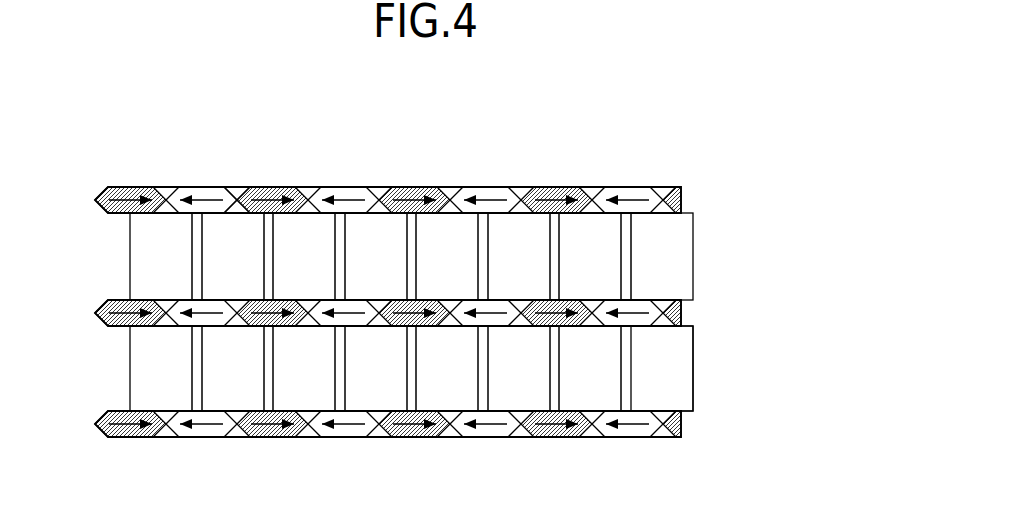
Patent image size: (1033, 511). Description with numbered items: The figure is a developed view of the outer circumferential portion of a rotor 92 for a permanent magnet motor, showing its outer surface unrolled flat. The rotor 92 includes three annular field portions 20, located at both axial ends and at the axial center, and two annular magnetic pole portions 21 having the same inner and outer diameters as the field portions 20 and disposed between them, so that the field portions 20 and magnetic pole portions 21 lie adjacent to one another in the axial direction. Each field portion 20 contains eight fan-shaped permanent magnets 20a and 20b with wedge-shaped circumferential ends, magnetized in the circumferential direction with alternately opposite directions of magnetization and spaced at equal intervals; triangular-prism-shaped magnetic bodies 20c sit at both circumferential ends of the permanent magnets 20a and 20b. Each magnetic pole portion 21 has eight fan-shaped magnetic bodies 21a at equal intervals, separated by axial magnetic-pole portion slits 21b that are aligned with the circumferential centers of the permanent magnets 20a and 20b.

The field portion 20 is at (409, 263).
The permanent magnet 20a is at (340, 188).
The permanent magnet 20b is at (132, 188).
The magnetic body 20c is at (233, 188).
The magnetic pole portion 21 is at (373, 355).
The magnetic body 21a is at (681, 394).
The magnetic-pole portion slit 21b is at (411, 393).
The rotor 92 is at (630, 196).